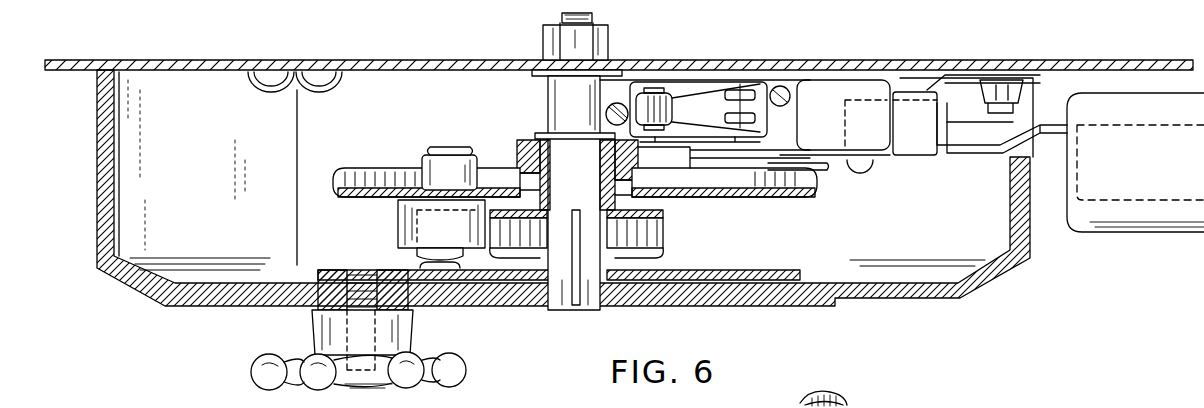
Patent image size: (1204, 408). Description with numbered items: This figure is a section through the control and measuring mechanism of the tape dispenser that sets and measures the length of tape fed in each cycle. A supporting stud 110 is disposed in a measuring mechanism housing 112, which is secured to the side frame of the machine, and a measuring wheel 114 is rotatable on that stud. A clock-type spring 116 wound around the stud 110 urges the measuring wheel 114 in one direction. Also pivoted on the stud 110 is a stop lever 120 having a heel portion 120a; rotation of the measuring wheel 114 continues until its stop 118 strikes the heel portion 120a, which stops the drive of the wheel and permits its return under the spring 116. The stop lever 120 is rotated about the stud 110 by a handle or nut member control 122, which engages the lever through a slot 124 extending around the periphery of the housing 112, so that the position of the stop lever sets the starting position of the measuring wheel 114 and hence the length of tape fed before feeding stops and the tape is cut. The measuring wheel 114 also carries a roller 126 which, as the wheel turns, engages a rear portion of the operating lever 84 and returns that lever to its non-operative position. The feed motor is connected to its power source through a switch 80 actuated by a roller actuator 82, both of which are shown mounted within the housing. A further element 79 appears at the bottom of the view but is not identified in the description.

The grommet 79 is at (846, 404).
The switch 80 is at (637, 85).
The roller actuator 82 is at (673, 100).
The operating lever 84 is at (1176, 238).
The supporting stud 110 is at (563, 298).
The measuring mechanism housing 112 is at (936, 292).
The measuring wheel 114 is at (748, 200).
The clock-type spring 116 is at (599, 207).
The stop 118 is at (398, 212).
The stop lever 120 is at (332, 270).
The heel portion 120a is at (400, 241).
The handle or nut member control 122 is at (256, 386).
The slot 124 is at (350, 290).
The roller 126 is at (424, 163).